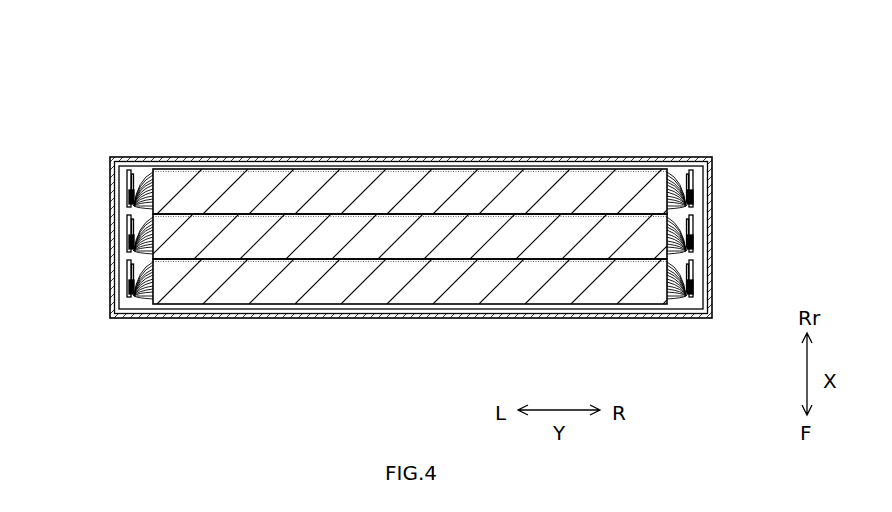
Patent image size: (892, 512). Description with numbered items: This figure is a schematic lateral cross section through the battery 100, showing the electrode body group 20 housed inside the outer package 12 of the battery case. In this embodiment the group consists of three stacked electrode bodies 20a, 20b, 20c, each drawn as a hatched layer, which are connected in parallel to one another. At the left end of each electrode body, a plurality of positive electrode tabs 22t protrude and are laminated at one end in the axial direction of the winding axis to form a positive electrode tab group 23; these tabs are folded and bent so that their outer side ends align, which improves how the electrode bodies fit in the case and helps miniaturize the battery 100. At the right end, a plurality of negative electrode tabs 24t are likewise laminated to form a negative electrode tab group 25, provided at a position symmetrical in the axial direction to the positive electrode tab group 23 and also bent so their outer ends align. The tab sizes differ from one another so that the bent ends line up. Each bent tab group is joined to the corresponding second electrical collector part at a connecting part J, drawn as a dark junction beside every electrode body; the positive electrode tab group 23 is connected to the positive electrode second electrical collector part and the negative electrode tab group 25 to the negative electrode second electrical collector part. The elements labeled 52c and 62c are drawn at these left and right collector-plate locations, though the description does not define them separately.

The battery 100 is at (646, 91).
The outer package 12 is at (544, 150).
The electrode body group 20 is at (382, 92).
The electrode body 20a is at (346, 282).
The electrode body 20b is at (283, 235).
The electrode body 20c is at (246, 190).
The positive electrode tab 22t is at (140, 178).
The negative electrode tab 24t is at (683, 178).
The positive electrode collector plate 52c is at (125, 275).
The negative electrode collector plate 62c is at (697, 273).
The connecting part J is at (697, 292).
The positive electrode tab group 23 is at (153, 332).
The negative electrode tab group 25 is at (695, 332).